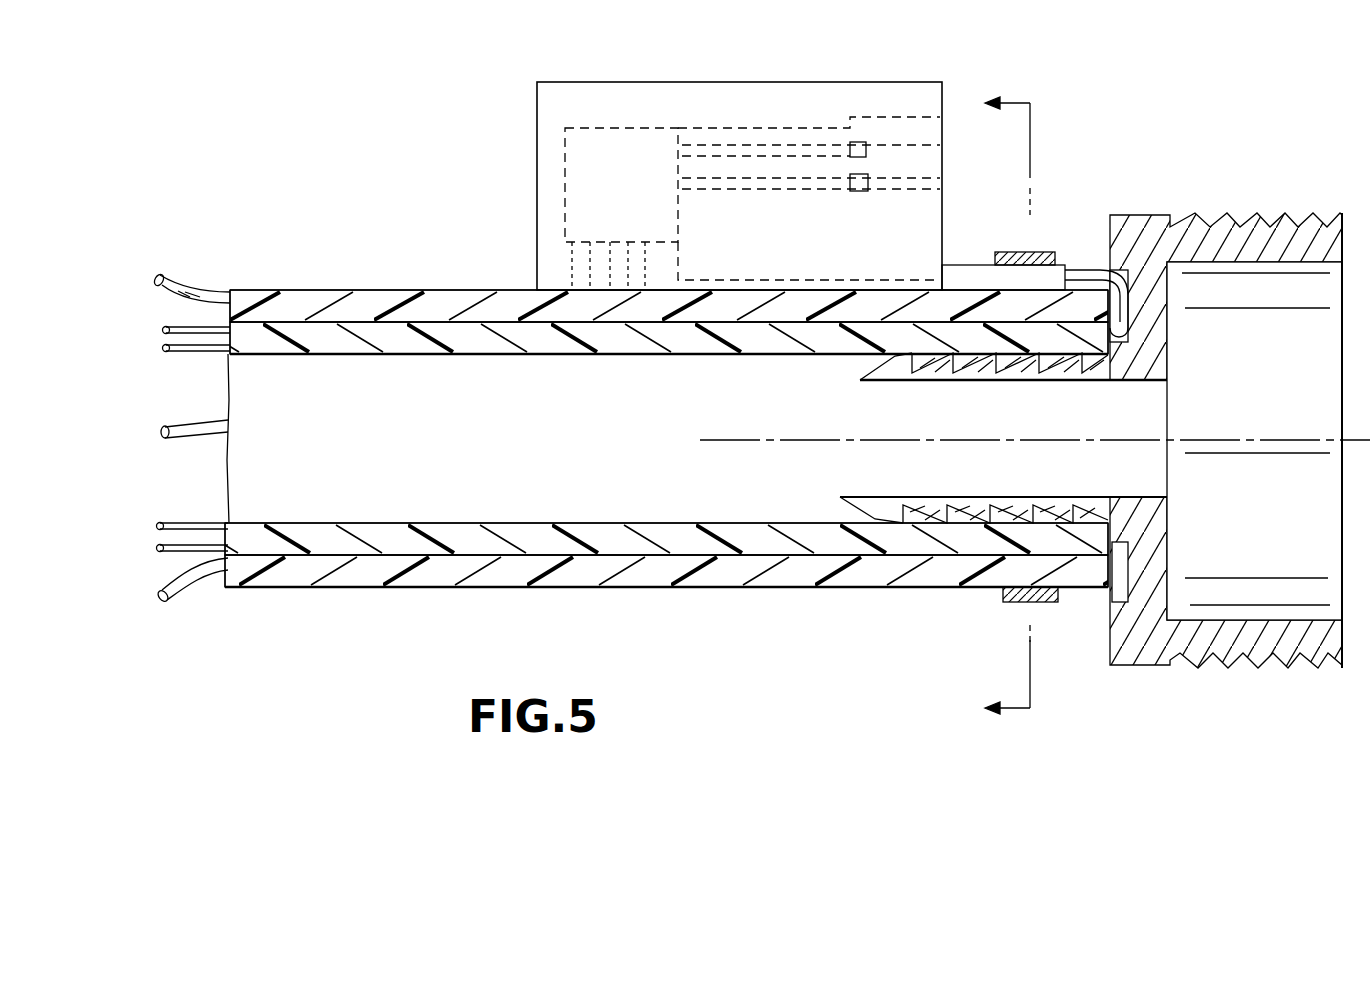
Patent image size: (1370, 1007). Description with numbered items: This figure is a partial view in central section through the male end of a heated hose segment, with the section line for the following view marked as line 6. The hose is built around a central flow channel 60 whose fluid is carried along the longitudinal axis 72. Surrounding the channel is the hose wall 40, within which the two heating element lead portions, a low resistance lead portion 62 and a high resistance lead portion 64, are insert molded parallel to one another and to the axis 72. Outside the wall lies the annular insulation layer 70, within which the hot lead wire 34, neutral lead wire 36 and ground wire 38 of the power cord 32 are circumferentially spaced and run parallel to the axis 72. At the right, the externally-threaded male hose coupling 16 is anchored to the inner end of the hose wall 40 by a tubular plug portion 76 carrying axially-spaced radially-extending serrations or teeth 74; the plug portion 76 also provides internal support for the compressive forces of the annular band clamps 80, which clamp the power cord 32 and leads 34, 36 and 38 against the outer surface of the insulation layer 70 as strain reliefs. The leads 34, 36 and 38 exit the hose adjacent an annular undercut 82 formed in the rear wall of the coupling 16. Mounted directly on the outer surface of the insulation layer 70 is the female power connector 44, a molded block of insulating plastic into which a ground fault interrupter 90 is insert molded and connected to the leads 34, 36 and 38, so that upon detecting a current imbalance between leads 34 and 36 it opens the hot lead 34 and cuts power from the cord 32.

The male hose coupling 16 is at (1250, 655).
The power cord 32 is at (945, 265).
The hot lead wire 34 is at (176, 274).
The neutral lead wire 36 is at (189, 578).
The ground wire 38 is at (200, 422).
The hose wall 40 is at (405, 355).
The power connector 44 is at (790, 82).
The flow channel 60 is at (606, 464).
The low resistance lead portion 62 is at (205, 352).
The high resistance lead portion 64 is at (176, 327).
The insulation layer 70 is at (440, 290).
The longitudinal axis 72 is at (1203, 440).
The serrations or teeth 74 is at (885, 360).
The plug portion 76 is at (952, 380).
The band clamp 80 is at (1025, 252).
The annular undercut 82 is at (1112, 600).
The ground fault interrupter 90 is at (568, 255).
The section line 6- 6 is at (989, 394).